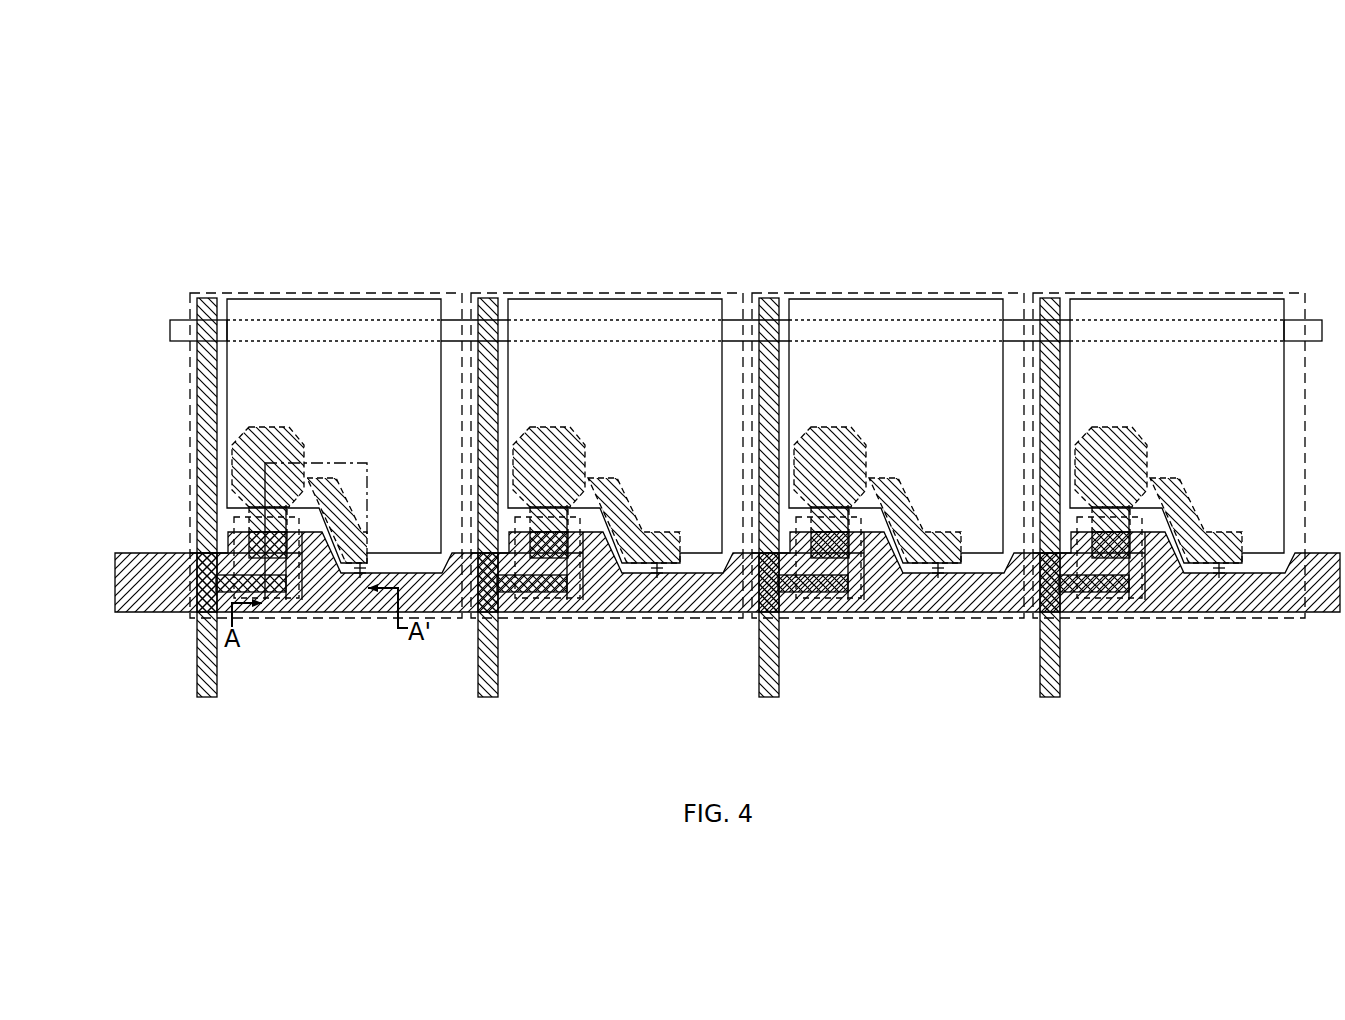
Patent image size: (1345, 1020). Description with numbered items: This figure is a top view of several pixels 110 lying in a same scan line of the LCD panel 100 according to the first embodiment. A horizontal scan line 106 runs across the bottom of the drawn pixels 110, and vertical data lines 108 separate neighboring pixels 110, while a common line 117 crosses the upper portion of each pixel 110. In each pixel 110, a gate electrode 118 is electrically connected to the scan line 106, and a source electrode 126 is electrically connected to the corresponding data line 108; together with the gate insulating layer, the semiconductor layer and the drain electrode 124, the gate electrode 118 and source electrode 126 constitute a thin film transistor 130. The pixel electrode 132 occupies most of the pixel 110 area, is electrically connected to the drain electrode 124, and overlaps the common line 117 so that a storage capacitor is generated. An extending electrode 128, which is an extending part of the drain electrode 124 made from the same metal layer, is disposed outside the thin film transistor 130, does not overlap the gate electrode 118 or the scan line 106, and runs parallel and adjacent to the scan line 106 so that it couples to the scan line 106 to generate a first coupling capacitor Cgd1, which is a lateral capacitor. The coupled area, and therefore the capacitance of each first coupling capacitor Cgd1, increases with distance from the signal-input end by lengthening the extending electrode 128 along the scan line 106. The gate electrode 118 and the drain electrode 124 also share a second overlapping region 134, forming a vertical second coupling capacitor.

The LCD panel 100 is at (1192, 175).
The scan line 106 is at (140, 613).
The data line 108 is at (200, 400).
The pixel 110 is at (190, 619).
The common line 117 is at (180, 322).
The gate electrode 118 is at (273, 604).
The drain electrode 124 is at (243, 470).
The source electrode 126 is at (230, 623).
The extending electrode 128 is at (342, 565).
The thin film transistor 130 is at (302, 594).
The pixel electrode 132 is at (302, 299).
The second overlapping region 134 is at (225, 518).
The first coupling capacitor Cgd1 is at (360, 578).